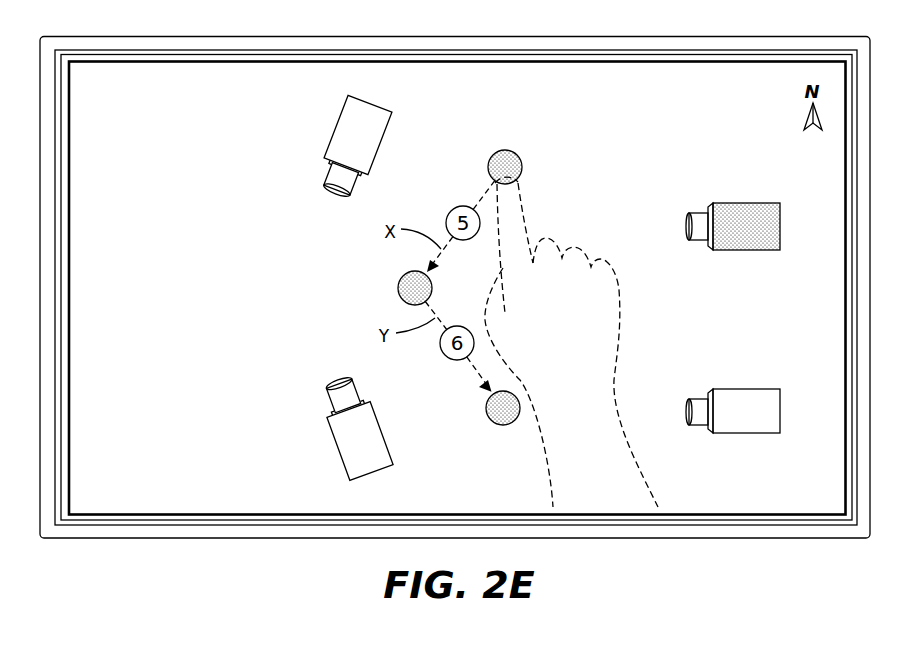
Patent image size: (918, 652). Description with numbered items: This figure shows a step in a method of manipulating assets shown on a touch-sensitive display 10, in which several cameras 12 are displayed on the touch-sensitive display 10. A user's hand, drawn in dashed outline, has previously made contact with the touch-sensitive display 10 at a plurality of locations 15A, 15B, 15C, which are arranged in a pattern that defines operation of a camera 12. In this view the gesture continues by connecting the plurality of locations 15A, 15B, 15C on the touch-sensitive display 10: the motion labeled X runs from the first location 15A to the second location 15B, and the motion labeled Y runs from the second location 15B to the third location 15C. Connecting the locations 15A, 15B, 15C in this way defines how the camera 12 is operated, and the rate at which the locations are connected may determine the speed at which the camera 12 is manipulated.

The touch-sensitive display 10 is at (655, 80).
The camera 12 is at (338, 122).
The location 15A is at (505, 150).
The location 15B is at (398, 288).
The location 15C is at (506, 424).